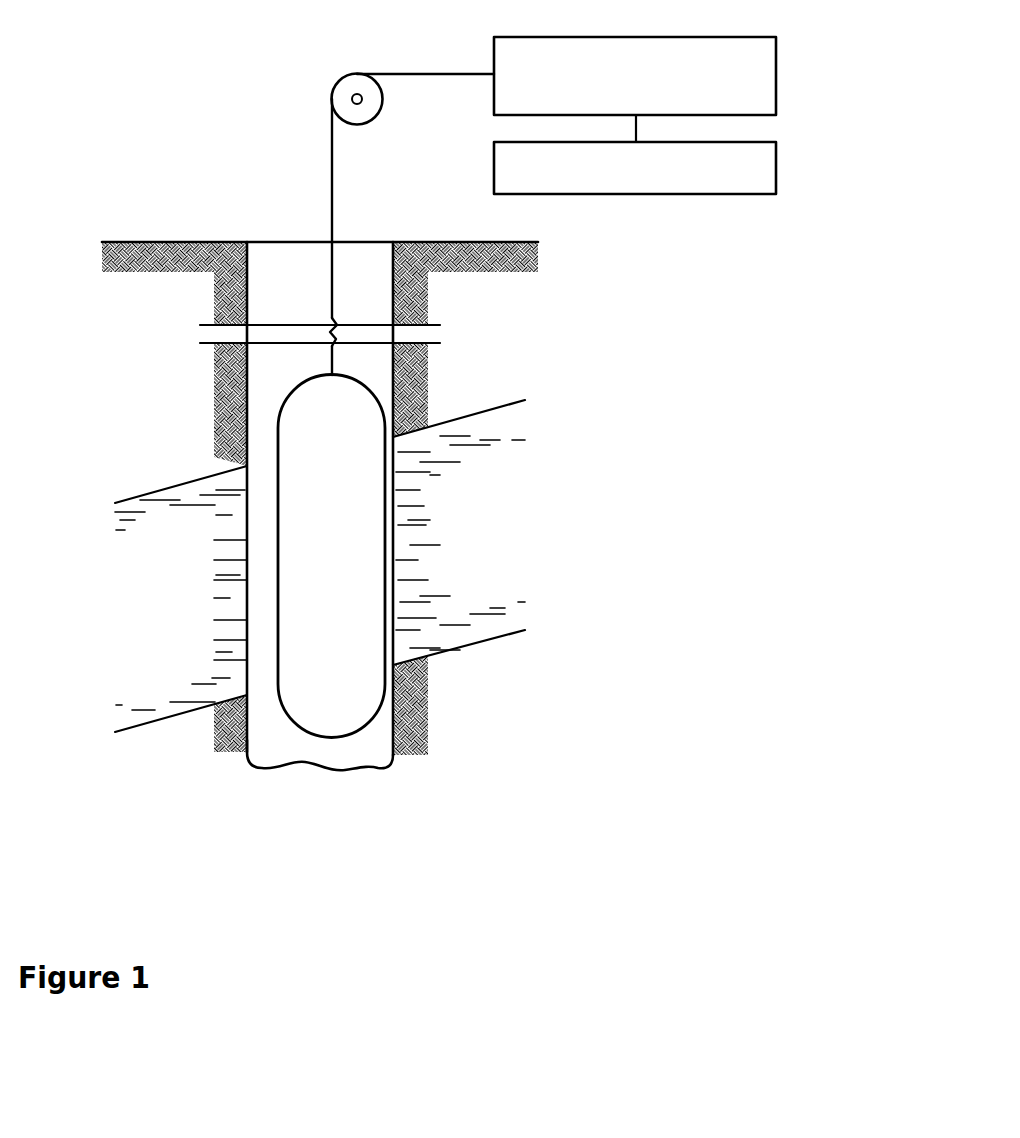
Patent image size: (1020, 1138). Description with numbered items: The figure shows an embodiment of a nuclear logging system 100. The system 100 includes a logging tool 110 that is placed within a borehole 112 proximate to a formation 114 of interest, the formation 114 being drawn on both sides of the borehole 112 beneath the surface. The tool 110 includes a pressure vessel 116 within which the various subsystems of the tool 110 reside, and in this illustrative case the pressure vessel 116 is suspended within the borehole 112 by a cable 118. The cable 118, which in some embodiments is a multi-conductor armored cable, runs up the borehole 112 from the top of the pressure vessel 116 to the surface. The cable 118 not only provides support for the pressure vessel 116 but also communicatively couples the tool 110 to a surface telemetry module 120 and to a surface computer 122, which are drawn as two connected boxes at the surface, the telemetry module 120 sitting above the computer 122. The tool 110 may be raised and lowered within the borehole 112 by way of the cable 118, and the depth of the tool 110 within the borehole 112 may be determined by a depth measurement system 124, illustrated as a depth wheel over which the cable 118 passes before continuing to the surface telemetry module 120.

The nuclear logging system 100 is at (200, 130).
The logging tool 110 is at (273, 402).
The borehole 112 is at (318, 282).
The formation 114 is at (505, 532).
The pressure vessel 116 is at (360, 432).
The cable 118 is at (333, 182).
The surface telemetry module 120 is at (777, 63).
The surface computer 122 is at (777, 170).
The depth measurement system 124 is at (376, 117).